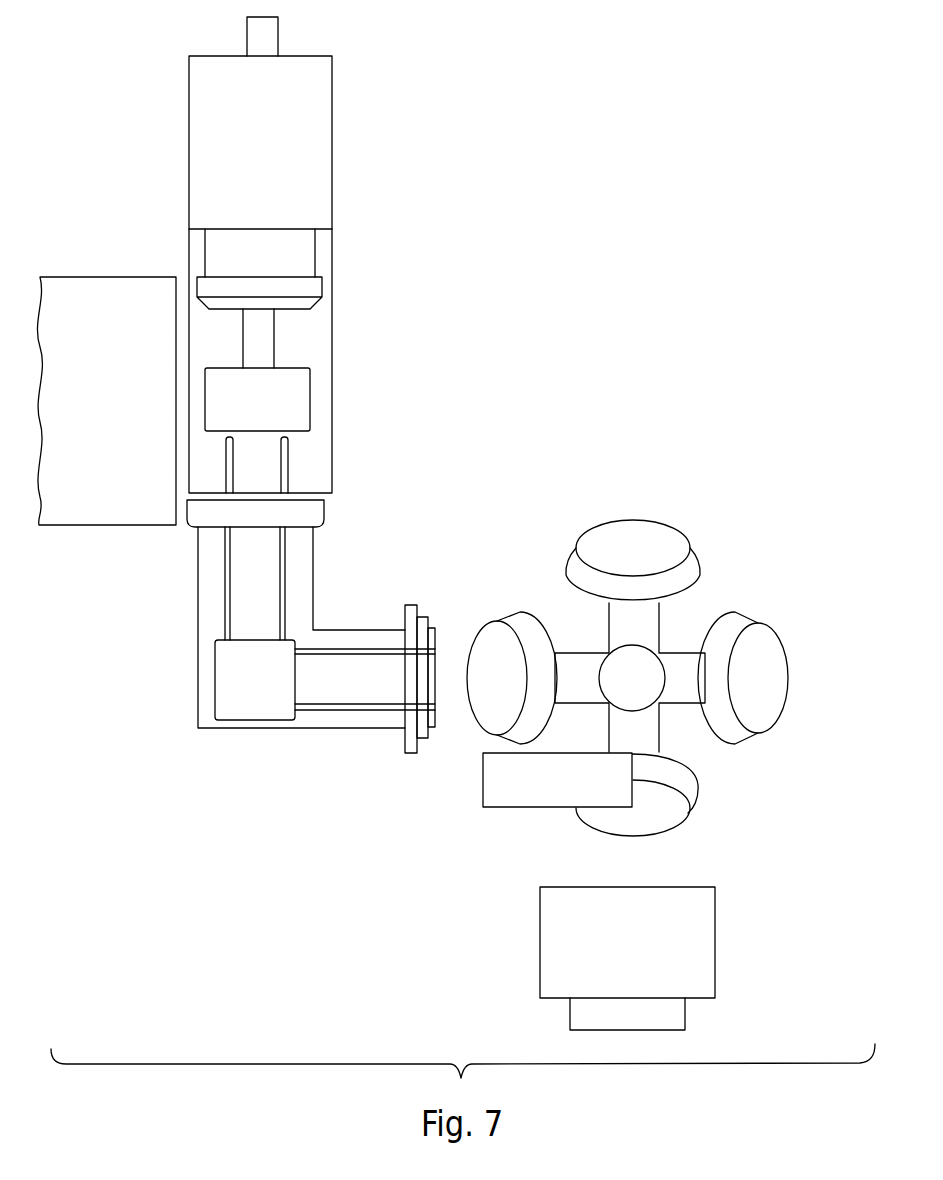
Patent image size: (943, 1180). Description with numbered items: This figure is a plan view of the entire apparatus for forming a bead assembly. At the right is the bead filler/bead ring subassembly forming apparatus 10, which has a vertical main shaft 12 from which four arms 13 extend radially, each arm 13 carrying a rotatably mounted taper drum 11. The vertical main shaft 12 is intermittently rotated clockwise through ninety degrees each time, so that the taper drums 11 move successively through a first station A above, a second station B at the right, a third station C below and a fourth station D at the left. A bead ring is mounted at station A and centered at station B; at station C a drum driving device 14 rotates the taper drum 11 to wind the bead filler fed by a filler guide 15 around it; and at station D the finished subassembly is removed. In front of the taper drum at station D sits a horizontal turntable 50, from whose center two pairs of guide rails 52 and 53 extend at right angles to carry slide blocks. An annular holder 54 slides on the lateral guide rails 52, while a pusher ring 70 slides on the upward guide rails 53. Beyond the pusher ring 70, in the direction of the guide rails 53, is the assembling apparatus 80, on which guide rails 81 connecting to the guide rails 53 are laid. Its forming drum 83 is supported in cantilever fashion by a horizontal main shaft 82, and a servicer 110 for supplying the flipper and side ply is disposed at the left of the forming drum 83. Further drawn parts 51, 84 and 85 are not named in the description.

The bead filler/bead ring subassembly forming apparatus 10 is at (665, 726).
The taper drum 11 is at (621, 568).
The vertical main shaft 12 is at (620, 701).
The arm 13 is at (620, 643).
The drum driving device 14 is at (615, 968).
The filler guide 15 is at (541, 803).
The horizontal turntable 50 is at (283, 665).
The drive block 51 is at (243, 703).
The guide rails 52 is at (369, 653).
The guide rails 53 is at (280, 598).
The annular holder 54 is at (423, 620).
The pusher ring 70 is at (313, 513).
The assembling apparatus 80 is at (305, 255).
The guide rails 81 is at (228, 452).
The horizontal main shaft 82 is at (267, 330).
The forming drum 83 is at (296, 393).
The cylinder 84 is at (318, 107).
The press head 85 is at (313, 288).
The servicer 110 is at (103, 421).